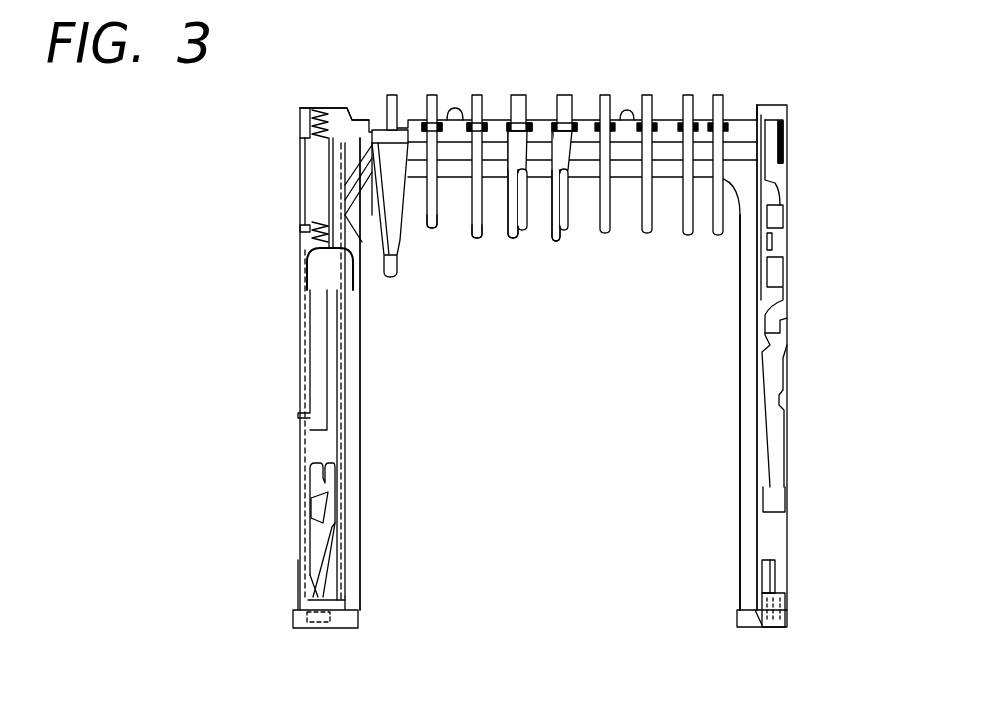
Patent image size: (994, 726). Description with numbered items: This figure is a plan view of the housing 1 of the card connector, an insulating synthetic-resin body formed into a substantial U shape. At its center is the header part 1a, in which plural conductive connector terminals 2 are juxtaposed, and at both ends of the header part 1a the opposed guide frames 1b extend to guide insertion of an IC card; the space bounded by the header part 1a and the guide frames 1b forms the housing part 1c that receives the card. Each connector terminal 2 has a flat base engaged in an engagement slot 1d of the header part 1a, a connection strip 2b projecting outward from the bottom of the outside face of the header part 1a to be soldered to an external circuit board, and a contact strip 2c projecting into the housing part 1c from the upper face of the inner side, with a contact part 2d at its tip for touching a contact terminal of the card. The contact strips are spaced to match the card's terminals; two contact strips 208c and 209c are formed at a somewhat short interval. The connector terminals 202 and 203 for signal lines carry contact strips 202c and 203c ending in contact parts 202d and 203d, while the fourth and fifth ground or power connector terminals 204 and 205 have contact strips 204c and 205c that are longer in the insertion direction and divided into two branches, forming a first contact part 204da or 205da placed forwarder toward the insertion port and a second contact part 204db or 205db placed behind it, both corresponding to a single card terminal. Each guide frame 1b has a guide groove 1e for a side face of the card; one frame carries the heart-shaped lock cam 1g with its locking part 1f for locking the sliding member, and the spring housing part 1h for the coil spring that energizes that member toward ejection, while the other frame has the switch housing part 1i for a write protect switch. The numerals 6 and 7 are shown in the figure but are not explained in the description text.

The housing 1 is at (798, 134).
The header part 1a is at (353, 130).
The guide frame 1b is at (305, 620).
The housing part 1c is at (690, 410).
The engagement slot 1d is at (730, 135).
The guide groove 1e is at (353, 571).
The locking part 1f is at (313, 512).
The heart-shaped lock cam 1g is at (312, 487).
The spring housing part 1h is at (303, 330).
The switch housing part 1i is at (770, 300).
The connector terminal 2 is at (377, 179).
The connection strip 2b is at (386, 105).
The contact strip 2c is at (380, 220).
The contact part 2d is at (307, 255).
The printed circuit board 6 is at (303, 378).
The spring 7 is at (308, 120).
The connector terminal for signal line 202 is at (430, 92).
The contact strip 202c is at (452, 108).
The contact part 202d is at (432, 232).
The connector terminal for signal line 203 is at (480, 86).
The contact strip 203c is at (486, 125).
The contact part 203d is at (478, 240).
The ground or power connector terminal 204 is at (528, 140).
The contact strip 204c is at (562, 150).
The first contact part 204da is at (512, 240).
The second contact part 204db is at (517, 232).
The ground or power connector terminal 205 is at (574, 94).
The contact strip 205c is at (654, 86).
The first contact part 205da is at (558, 240).
The second contact part 205db is at (565, 238).
The contact strip 208c is at (690, 202).
The contact strip 209c is at (718, 170).